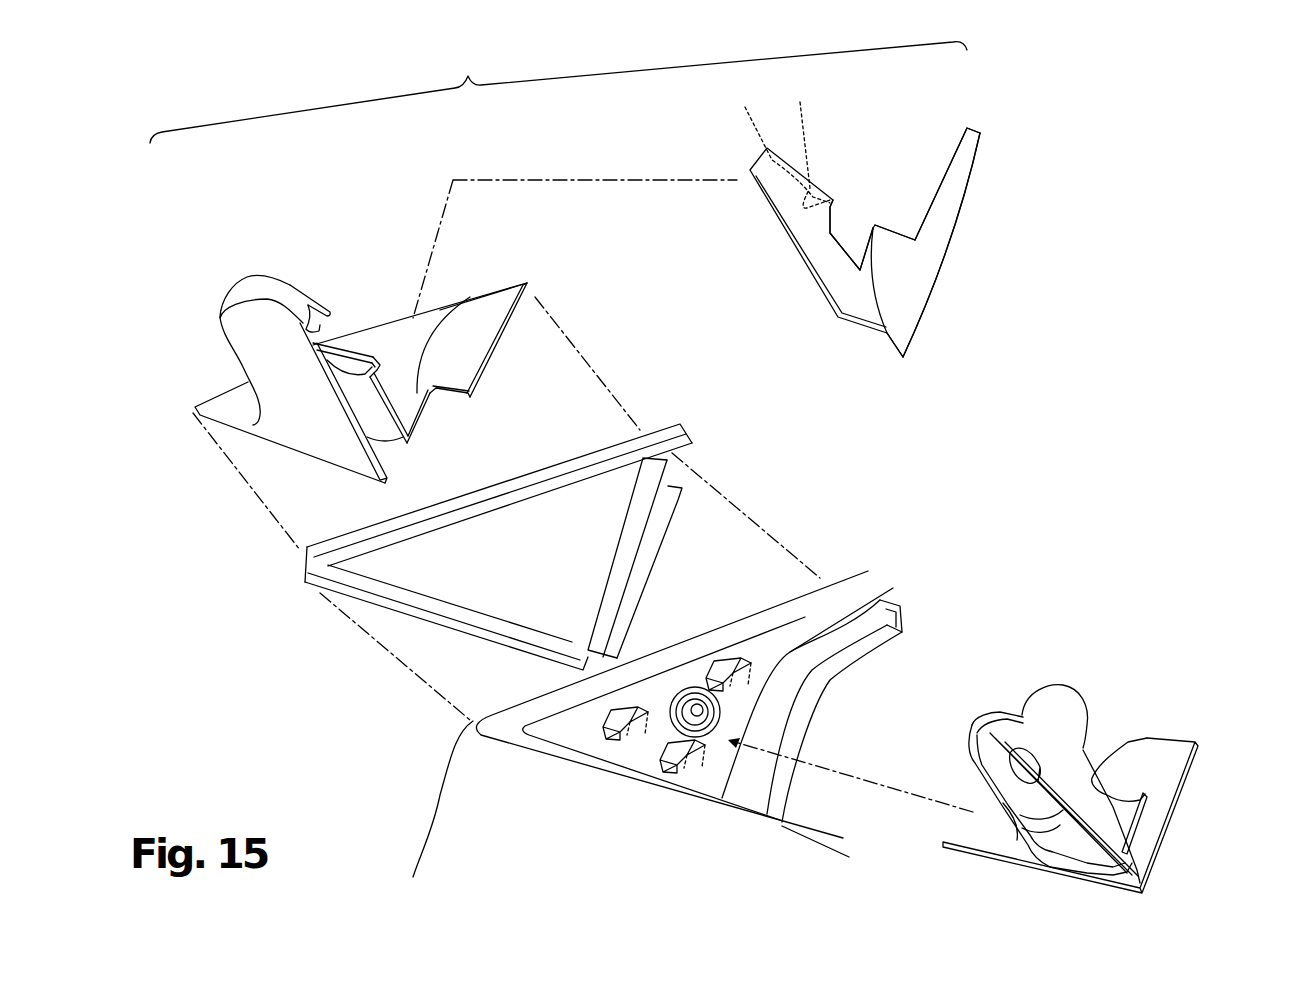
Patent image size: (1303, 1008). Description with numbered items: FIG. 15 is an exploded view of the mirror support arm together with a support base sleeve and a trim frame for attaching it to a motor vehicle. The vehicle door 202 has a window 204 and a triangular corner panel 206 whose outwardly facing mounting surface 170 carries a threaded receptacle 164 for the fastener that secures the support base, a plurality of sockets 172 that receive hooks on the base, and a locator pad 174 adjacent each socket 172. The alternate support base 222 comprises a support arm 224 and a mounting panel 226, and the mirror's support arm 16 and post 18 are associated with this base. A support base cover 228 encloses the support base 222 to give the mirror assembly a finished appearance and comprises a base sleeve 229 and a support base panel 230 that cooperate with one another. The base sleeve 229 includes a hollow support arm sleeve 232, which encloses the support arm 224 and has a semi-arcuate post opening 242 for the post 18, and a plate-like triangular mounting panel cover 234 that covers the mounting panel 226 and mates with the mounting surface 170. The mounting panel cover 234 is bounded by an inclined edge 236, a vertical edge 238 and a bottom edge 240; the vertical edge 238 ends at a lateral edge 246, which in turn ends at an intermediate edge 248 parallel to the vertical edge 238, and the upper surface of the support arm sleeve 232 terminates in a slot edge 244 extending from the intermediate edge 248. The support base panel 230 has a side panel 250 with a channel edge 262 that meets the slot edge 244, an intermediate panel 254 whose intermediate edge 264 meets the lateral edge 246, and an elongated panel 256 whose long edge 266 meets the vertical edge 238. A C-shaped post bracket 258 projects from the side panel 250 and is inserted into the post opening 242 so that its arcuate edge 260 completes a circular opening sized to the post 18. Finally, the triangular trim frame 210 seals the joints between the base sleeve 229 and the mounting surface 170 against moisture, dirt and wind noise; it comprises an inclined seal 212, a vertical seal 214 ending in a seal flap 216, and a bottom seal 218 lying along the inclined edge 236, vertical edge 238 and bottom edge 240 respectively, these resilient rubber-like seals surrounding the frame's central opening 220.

The support base cover 228 is at (558, 92).
The base sleeve 229 is at (212, 280).
The support arm sleeve 232 is at (263, 357).
The post opening 242 is at (290, 283).
The inclined edge 236 is at (348, 322).
The mounting panel cover 234 is at (400, 363).
The slot edge 244 is at (398, 408).
The lateral edge 246 is at (462, 401).
The vertical edge 238 is at (510, 327).
The intermediate edge 248 is at (420, 320).
The bottom edge 240 is at (297, 450).
The support base panel 230 is at (958, 236).
The side panel 250 is at (817, 235).
The post bracket 258 is at (802, 137).
The arcuate edge 260 is at (773, 142).
The channel edge 262 is at (843, 242).
The intermediate edge 264 is at (897, 235).
The long edge 266 is at (952, 158).
The elongated panel 256 is at (915, 277).
The intermediate panel 254 is at (877, 302).
The trim frame 210 is at (355, 612).
The inclined seal 212 is at (350, 543).
The bottom seal 218 is at (410, 607).
The frame opening 220 is at (529, 580).
The vertical seal 214 is at (633, 537).
The seal flap 216 is at (642, 565).
The corner panel 206 is at (570, 733).
The door 202 is at (442, 843).
The mounting surface 170 is at (595, 737).
The window 204 is at (830, 797).
The threaded receptacle 164 is at (716, 717).
The sockets 172 is at (622, 712).
The locator pad 174 is at (743, 662).
The support base 222 is at (1197, 732).
The mounting panel 226 is at (1162, 800).
The support arm 224 is at (1068, 760).
The post 18 is at (1070, 710).
The support arm 16 is at (995, 705).